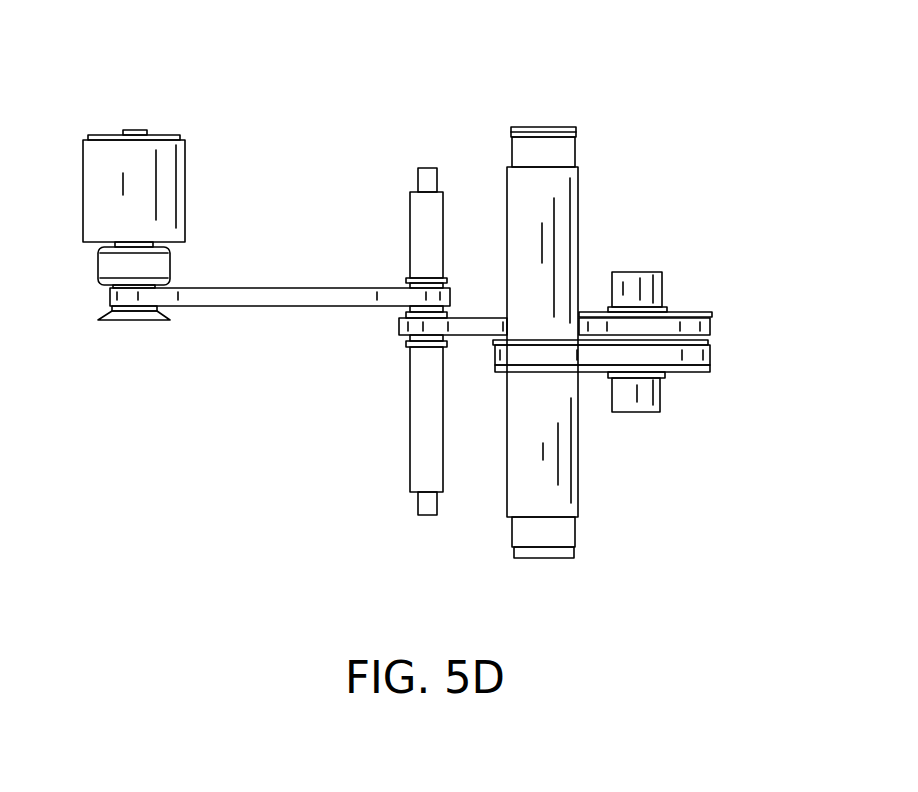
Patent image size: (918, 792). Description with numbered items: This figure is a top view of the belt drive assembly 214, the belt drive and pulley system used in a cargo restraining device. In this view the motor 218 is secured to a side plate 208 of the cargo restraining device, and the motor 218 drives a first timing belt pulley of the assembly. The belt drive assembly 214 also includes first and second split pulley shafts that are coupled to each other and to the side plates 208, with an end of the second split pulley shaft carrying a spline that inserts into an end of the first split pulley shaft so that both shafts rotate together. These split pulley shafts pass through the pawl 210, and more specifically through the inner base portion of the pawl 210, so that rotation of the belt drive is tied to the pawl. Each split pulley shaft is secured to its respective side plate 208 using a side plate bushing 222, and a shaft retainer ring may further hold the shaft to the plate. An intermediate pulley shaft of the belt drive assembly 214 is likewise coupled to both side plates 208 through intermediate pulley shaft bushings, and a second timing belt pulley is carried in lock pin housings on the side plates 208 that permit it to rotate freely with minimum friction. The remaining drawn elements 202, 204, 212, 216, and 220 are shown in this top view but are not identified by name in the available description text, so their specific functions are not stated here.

The motor 202 is at (127, 303).
The motor mount bracket 204 is at (117, 303).
The side plate 208 is at (234, 306).
The pawl 210 is at (398, 302).
The bearing flange 212 is at (408, 280).
The belt drive assembly 214 is at (530, 358).
The lower plate 216 is at (565, 363).
The motor 218 is at (687, 311).
The shaft 220 is at (480, 318).
The side plate bushing 222 is at (695, 358).